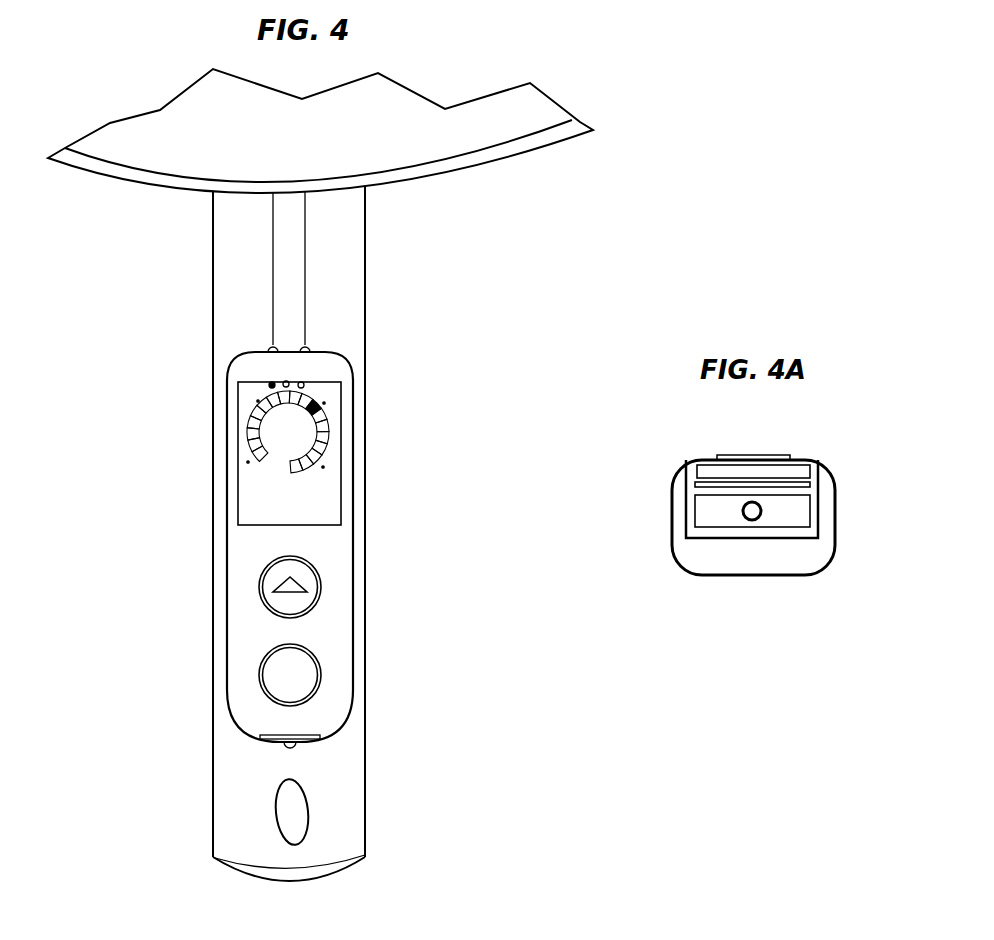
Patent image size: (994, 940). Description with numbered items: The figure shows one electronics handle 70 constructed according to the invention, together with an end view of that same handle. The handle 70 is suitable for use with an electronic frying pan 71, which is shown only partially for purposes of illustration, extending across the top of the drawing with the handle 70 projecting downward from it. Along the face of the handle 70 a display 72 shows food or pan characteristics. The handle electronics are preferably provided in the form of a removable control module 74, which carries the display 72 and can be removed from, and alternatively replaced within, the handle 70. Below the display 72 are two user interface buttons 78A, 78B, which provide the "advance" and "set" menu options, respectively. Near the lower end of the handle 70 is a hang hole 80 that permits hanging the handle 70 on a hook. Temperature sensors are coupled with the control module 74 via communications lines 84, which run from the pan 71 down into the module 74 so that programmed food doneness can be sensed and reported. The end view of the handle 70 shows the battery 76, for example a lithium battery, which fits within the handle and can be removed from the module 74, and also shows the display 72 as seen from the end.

In FIG. 4, the handle 70 is at (350, 808).
In FIG. 4, the electronic frying pan 71 is at (498, 132).
In FIG. 4, the display 72 is at (341, 455).
In FIG. 4A, the display 72 is at (793, 470).
In FIG. 4, the removable control module 74 is at (365, 570).
In FIG. 4A, the battery 76 is at (788, 515).
In FIG. 4, the user interface button 78A is at (268, 581).
In FIG. 4, the user interface button 78B is at (268, 667).
In FIG. 4, the hang hole 80 is at (284, 815).
In FIG. 4, the communications lines 84 is at (273, 280).